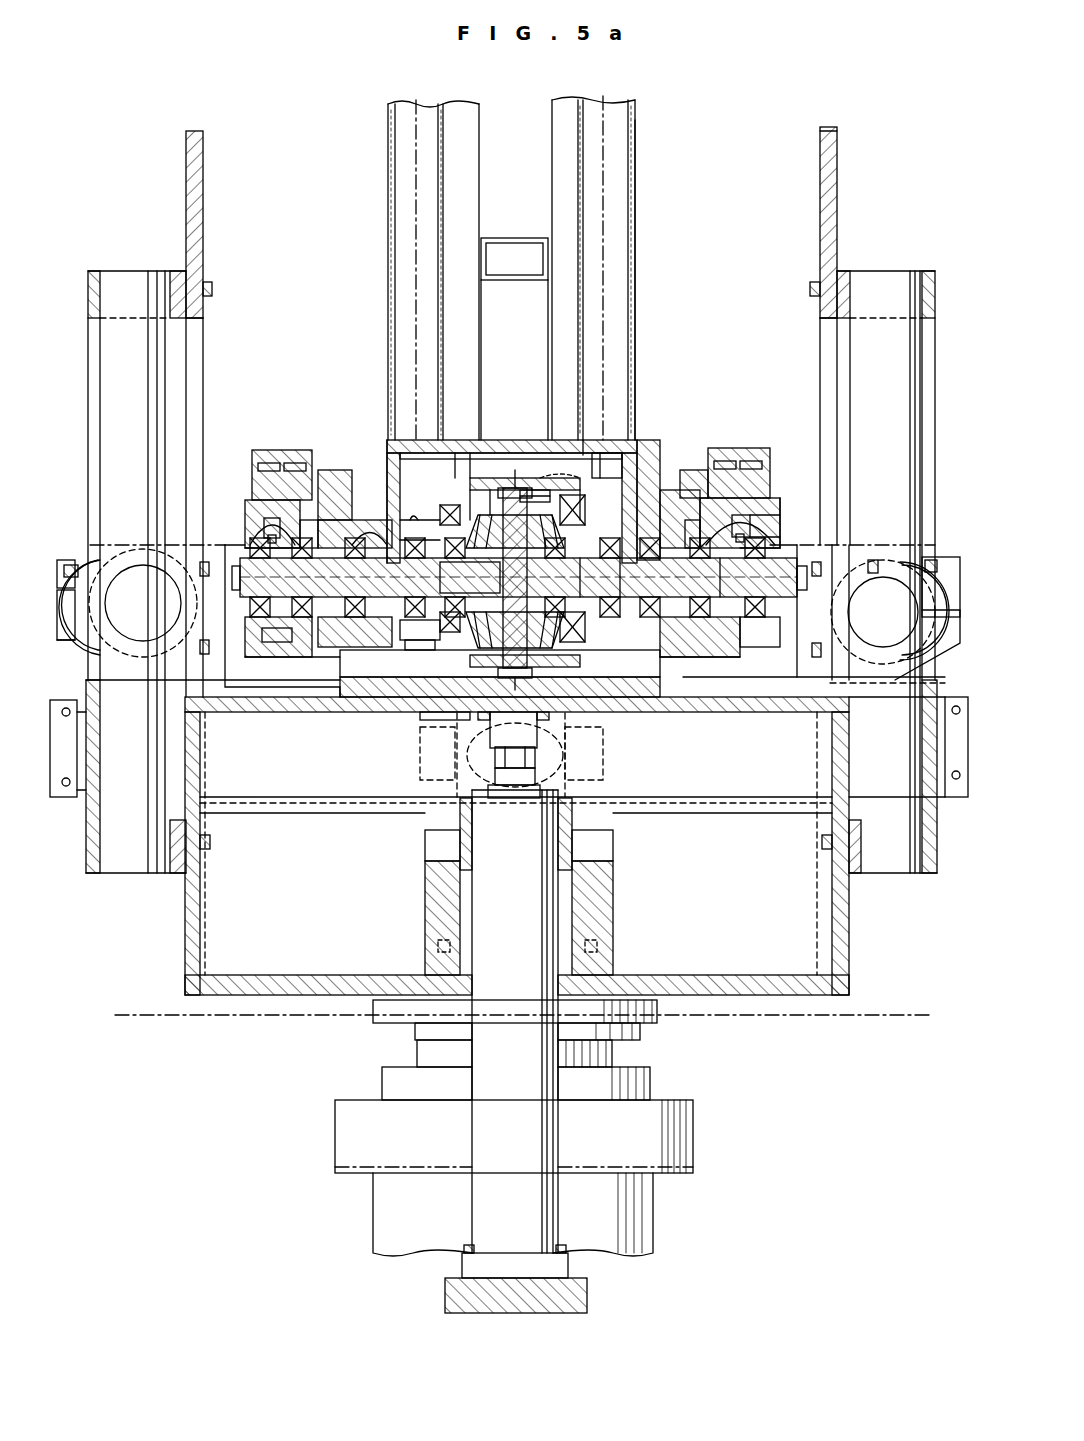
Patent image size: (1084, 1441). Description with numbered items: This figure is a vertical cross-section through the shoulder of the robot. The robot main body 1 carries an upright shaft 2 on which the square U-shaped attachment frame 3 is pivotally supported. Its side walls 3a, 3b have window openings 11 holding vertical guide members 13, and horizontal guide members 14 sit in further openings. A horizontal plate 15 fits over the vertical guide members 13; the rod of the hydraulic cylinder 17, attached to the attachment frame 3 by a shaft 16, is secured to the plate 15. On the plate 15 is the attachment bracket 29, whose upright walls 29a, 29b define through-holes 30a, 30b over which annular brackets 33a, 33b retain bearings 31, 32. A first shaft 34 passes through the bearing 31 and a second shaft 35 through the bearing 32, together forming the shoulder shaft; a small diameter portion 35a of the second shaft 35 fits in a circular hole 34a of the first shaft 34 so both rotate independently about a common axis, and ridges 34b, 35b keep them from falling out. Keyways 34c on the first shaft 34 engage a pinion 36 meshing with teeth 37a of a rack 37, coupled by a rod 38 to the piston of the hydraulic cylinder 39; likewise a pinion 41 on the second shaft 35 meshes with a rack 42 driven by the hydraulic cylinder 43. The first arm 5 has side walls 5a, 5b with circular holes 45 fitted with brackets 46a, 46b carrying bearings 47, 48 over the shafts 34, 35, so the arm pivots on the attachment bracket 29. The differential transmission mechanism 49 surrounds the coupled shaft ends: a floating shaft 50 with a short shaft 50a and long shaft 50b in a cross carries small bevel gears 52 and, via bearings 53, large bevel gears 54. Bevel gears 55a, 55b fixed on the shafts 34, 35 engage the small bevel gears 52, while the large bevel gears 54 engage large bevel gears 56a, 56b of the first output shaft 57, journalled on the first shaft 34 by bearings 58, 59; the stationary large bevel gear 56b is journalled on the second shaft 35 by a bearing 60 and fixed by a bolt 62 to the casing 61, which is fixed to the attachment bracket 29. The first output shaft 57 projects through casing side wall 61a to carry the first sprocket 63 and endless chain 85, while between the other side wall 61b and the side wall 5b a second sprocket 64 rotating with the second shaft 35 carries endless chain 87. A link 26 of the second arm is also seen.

The robot main body 1 is at (158, 1015).
The shaft 2 is at (605, 1052).
The attachment frame 3 is at (838, 170).
The left side wall 3a is at (204, 210).
The right side wall 3b is at (820, 180).
The first arm 5 is at (637, 152).
The side wall 5a is at (632, 452).
The side wall 5b is at (387, 445).
The window opening 11 is at (203, 318).
The vertical guide member 13 is at (100, 406).
The horizontal guide member 14 is at (105, 548).
The vertically displaceable horizontal plate 15 is at (222, 712).
The shaft 16 is at (425, 850).
The hydraulic cylinder 17 is at (551, 1203).
The link 26 is at (511, 238).
The attachment bracket 29 is at (540, 745).
The left upright wall 29a is at (730, 462).
The right upright wall 29b is at (336, 480).
The circular through-hole 30a is at (720, 470).
The circular through-hole 30b is at (360, 522).
The bearing 31 is at (700, 660).
The bearing 32 is at (350, 647).
The annular bracket 33a is at (712, 635).
The annular bracket 33b is at (280, 462).
The first shaft 34 is at (807, 570).
The circular hole 34a is at (590, 580).
The ridge 34b is at (650, 578).
The keyways 34c is at (711, 577).
The second shaft 35 is at (252, 635).
The small diameter portion 35a is at (545, 528).
The ridge 35b is at (302, 617).
The pinion 36 is at (760, 635).
The rack 37 is at (755, 535).
The teeth 37a is at (760, 548).
The rod 38 is at (778, 498).
The hydraulic cylinder 39 is at (755, 515).
The pinion 41 is at (270, 645).
The rack 42 is at (250, 532).
The hydraulic cylinder 43 is at (250, 508).
The circular hole 45 is at (446, 505).
The bracket 46a is at (690, 470).
The bracket 46b is at (393, 455).
The bearing 47 is at (690, 697).
The bearing 48 is at (514, 577).
The differential transmission mechanism 49 is at (528, 470).
The floating shaft 50 is at (485, 455).
The short shaft 50a is at (520, 478).
The long shaft 50b is at (500, 490).
The small bevel gear 52 is at (527, 635).
The bearing 53 is at (468, 460).
The large bevel gear 54 is at (605, 455).
The bevel gear 55a is at (580, 660).
The bevel gear 55b is at (490, 480).
The large bevel gear 56a is at (580, 700).
The large bevel gear 56b is at (450, 700).
The first output shaft 57 is at (585, 625).
The bearing 58 is at (600, 455).
The bearing 59 is at (670, 492).
The bearing 60 is at (485, 578).
The casing 61 is at (448, 455).
The side wall 61a is at (600, 440).
The side wall 61b is at (418, 520).
The bolt 62 is at (430, 650).
The first sprocket 63 is at (648, 458).
The second sprocket 64 is at (440, 632).
The endless chain 85 is at (603, 100).
The endless chain 87 is at (416, 104).